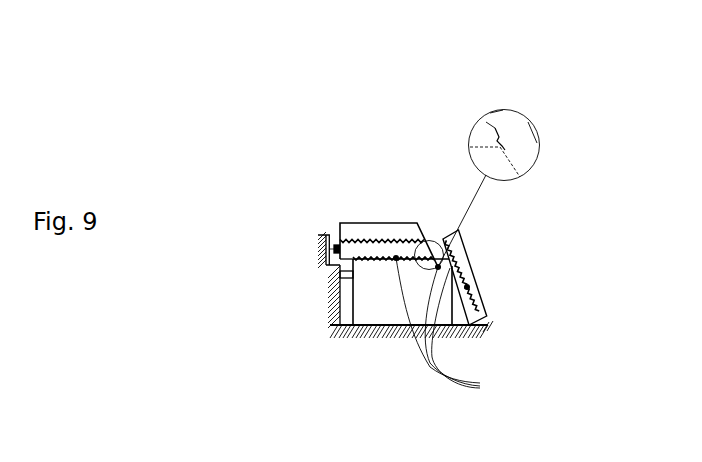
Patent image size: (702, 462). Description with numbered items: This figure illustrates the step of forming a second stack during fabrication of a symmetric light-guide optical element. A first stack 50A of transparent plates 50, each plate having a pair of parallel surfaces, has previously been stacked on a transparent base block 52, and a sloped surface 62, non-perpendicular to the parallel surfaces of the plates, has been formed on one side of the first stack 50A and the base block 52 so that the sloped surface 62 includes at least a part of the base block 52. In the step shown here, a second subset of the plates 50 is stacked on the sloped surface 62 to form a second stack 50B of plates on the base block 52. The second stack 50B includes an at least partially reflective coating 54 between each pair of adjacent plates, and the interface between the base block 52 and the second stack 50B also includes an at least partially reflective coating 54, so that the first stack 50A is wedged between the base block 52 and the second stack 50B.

The transparent plates 50 is at (481, 303).
The first stack of plates 50A is at (340, 232).
The second stack of plates 50B is at (492, 317).
The transparent base block 52 is at (376, 315).
The at least partially reflective coating 54 is at (456, 327).
The sloped surface 62 is at (495, 128).